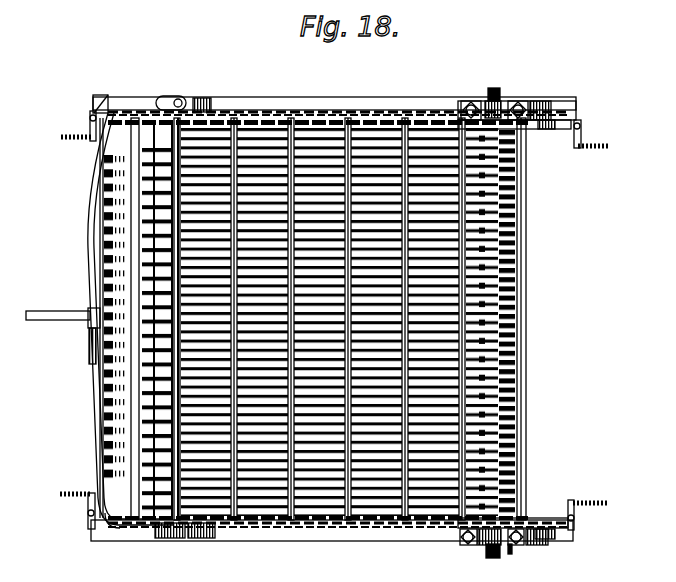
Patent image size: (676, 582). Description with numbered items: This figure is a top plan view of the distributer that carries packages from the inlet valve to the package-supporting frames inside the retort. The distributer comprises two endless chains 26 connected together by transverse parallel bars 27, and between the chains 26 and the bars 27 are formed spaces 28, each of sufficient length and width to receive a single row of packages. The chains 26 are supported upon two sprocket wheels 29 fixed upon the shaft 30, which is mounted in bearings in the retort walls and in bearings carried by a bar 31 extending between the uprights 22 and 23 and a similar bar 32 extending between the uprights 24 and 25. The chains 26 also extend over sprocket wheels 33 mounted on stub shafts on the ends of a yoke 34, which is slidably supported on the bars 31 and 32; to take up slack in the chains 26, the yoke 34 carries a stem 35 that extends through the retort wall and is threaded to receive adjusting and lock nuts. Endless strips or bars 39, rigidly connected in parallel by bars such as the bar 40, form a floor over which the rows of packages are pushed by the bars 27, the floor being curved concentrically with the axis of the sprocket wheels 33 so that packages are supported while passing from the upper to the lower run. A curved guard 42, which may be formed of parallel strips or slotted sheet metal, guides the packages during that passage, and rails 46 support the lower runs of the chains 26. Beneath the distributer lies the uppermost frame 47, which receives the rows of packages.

The upright 22 is at (70, 128).
The upright 23 is at (594, 137).
The upright 24 is at (62, 486).
The upright 25 is at (584, 493).
The endless chain 26 is at (264, 107).
The transverse parallel bar 27 is at (340, 140).
The space 28 is at (262, 548).
The sprocket wheel 29 is at (503, 98).
The shaft 30 is at (500, 308).
The bar 31 is at (545, 96).
The bar 32 is at (242, 526).
The sprocket wheel 33 is at (160, 92).
The yoke 34 is at (80, 237).
The stem 35 is at (38, 302).
The endless strip or bar 39 is at (204, 170).
The bar 40 is at (430, 236).
The guard 42 is at (95, 175).
The rail 46 is at (548, 121).
The uppermost frame 47 is at (95, 405).